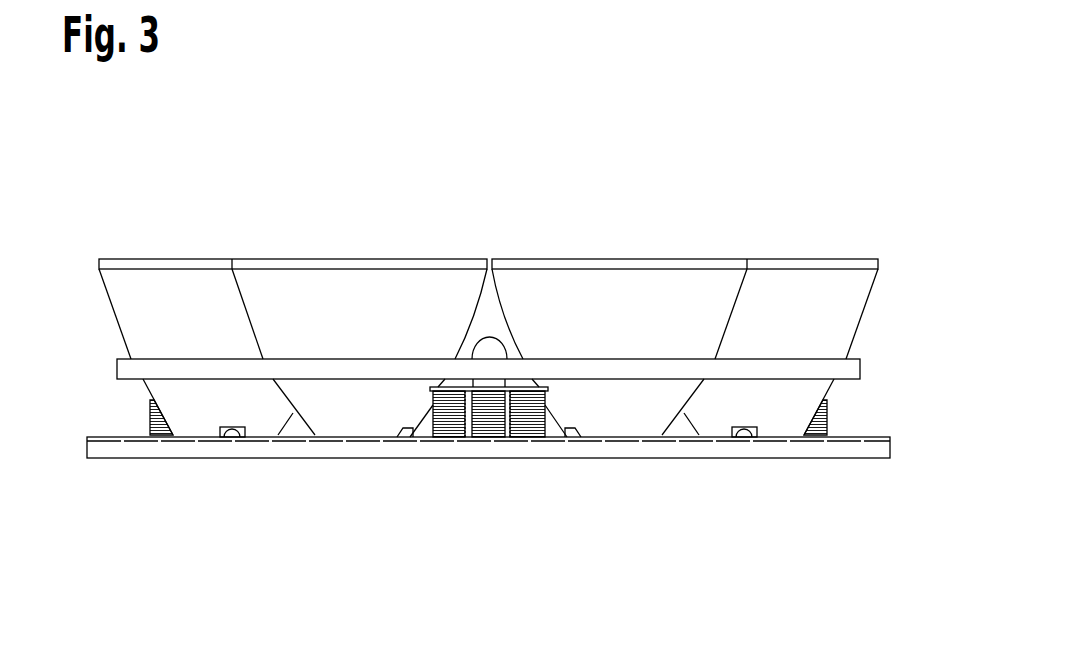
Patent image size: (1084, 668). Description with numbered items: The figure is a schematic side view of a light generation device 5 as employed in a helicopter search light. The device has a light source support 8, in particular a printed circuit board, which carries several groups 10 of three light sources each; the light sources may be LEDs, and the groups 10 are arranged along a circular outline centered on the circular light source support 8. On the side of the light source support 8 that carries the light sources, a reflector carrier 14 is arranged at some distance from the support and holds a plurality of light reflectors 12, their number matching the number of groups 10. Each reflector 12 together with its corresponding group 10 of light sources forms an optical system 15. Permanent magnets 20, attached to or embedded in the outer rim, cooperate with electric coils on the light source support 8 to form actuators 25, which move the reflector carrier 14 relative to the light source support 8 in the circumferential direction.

The light generation device 5 is at (512, 182).
The light source support 8 is at (810, 448).
The group of light sources 10 is at (228, 443).
The light reflector 12 is at (177, 268).
The reflector carrier 14 is at (843, 370).
The optical system 15 is at (102, 248).
The permanent magnet 20 is at (493, 387).
The actuator 25 is at (489, 462).